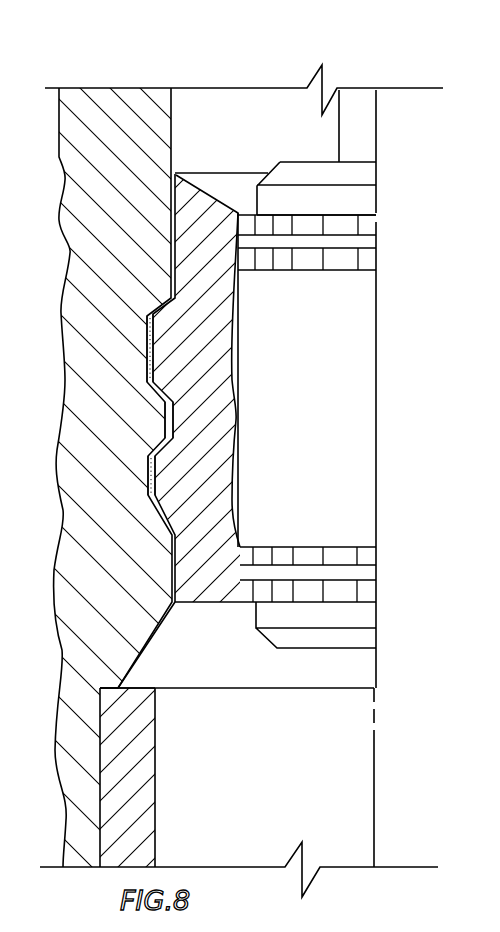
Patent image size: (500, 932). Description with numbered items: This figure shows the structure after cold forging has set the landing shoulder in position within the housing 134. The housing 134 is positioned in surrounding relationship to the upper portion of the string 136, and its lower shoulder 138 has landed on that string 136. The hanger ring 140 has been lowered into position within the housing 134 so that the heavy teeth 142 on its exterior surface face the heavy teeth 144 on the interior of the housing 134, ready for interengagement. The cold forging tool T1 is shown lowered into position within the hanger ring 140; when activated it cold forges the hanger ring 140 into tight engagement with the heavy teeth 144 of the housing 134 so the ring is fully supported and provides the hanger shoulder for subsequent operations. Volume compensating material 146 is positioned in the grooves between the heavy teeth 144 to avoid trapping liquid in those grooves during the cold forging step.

The housing 134 is at (130, 88).
The string 136 is at (156, 812).
The lower shoulder 138 is at (100, 691).
The hanger ring 140 is at (237, 468).
The heavy teeth 142 is at (146, 350).
The heavy teeth 144 is at (167, 420).
The volume compensating material 146 is at (146, 318).
The cold forging tool T1 is at (277, 161).